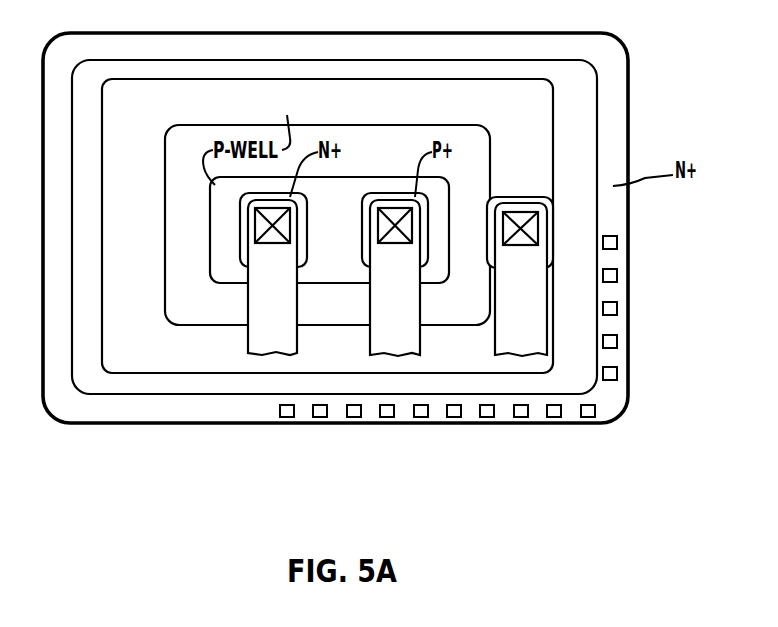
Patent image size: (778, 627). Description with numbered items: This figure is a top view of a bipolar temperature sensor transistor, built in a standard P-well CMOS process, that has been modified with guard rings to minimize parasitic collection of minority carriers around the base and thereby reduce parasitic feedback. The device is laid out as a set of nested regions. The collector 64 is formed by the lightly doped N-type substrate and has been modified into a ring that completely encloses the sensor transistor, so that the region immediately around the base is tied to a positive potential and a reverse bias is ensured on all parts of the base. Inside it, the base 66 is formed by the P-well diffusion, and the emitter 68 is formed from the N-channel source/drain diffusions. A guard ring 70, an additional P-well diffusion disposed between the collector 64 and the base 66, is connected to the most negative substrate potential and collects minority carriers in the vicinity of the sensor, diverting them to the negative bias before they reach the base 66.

The collector 64 is at (613, 408).
The base 66 is at (412, 335).
The emitter 68 is at (295, 333).
The guard ring 70 is at (542, 327).